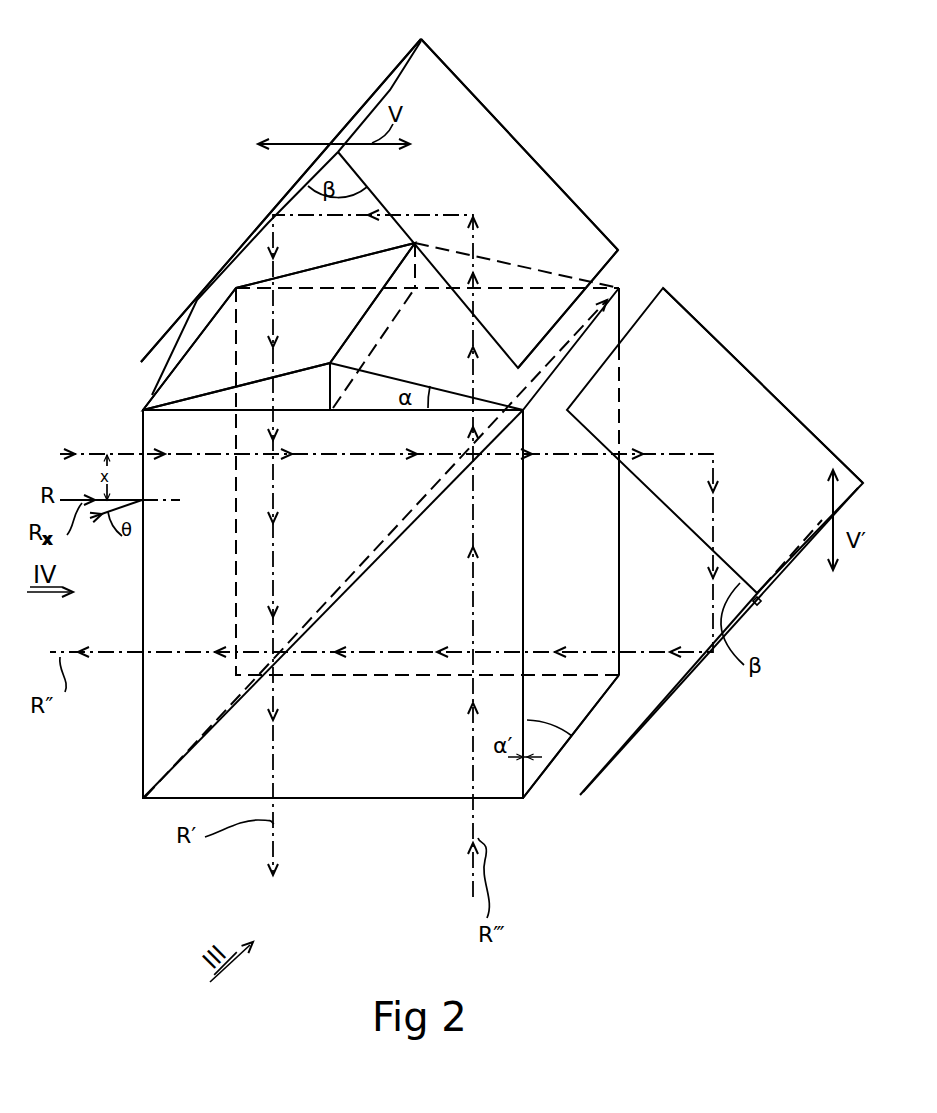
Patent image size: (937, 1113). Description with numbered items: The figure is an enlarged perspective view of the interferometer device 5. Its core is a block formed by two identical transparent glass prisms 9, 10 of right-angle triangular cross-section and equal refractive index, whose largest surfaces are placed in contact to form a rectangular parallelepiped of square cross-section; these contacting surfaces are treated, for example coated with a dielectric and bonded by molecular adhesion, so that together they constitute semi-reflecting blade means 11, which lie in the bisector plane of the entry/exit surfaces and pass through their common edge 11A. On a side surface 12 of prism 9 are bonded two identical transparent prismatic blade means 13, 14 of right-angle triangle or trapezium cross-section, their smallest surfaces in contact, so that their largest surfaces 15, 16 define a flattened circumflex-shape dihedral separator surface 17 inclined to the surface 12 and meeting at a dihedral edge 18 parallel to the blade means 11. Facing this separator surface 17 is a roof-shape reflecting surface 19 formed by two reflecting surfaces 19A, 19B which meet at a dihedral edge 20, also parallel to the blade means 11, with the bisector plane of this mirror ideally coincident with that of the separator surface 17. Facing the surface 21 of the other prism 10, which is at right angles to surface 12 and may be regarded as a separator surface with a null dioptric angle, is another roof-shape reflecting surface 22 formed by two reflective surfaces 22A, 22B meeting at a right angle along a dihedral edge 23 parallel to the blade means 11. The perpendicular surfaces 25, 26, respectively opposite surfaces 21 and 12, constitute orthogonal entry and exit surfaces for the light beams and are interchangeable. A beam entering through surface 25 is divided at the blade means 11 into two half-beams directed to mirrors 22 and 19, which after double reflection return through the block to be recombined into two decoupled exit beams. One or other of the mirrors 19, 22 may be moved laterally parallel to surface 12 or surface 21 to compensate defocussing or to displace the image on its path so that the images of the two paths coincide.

The interferometer device 5 is at (205, 870).
The transparent prism 9 is at (140, 573).
The transparent prism 10 is at (408, 802).
The semi-reflecting blade means 11 is at (342, 596).
The common edge 11A is at (178, 760).
The side surface 12 is at (307, 406).
The prismatic blade means 13 is at (200, 396).
The prismatic blade means 14 is at (432, 384).
The largest surface 15 is at (327, 264).
The largest surface 16 is at (497, 260).
The dihedral separator surface 17 is at (257, 377).
The dihedral edge 18 is at (368, 307).
The roof-shape reflecting surface 19 is at (517, 136).
The reflecting surface 19A is at (338, 131).
The reflecting surface 19B is at (618, 250).
The dihedral edge 20 is at (383, 97).
The surface 21 is at (590, 715).
The roof-shape reflecting surface 22 is at (779, 393).
The reflective surface 22A is at (722, 345).
The reflective surface 22B is at (638, 735).
The dihedral edge 23 is at (795, 566).
The entry/exit surface 25 is at (142, 622).
The entry/exit surface 26 is at (320, 800).